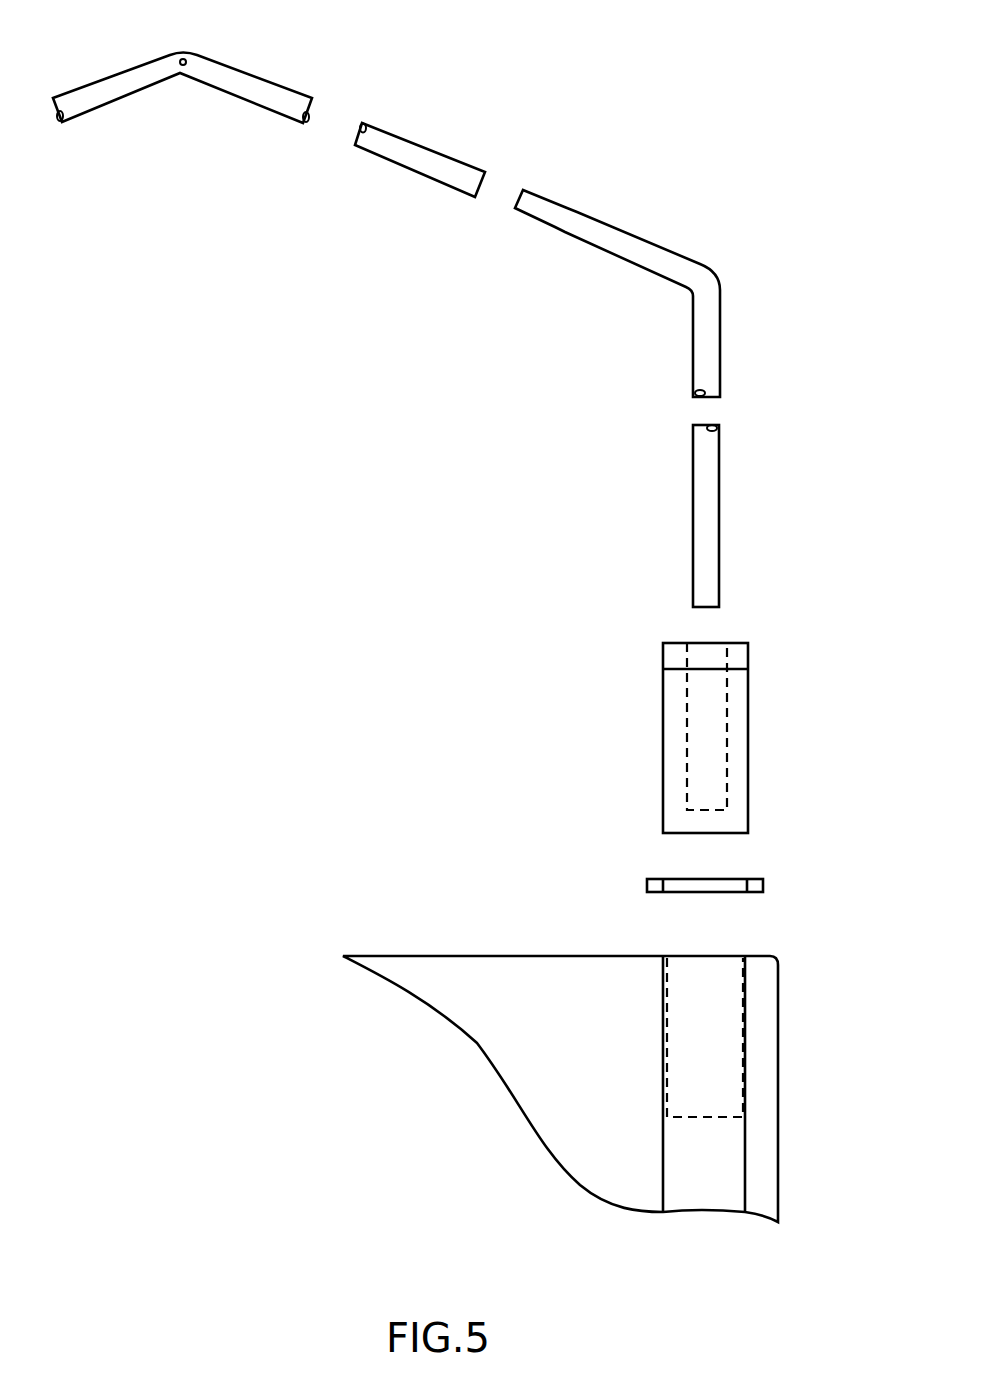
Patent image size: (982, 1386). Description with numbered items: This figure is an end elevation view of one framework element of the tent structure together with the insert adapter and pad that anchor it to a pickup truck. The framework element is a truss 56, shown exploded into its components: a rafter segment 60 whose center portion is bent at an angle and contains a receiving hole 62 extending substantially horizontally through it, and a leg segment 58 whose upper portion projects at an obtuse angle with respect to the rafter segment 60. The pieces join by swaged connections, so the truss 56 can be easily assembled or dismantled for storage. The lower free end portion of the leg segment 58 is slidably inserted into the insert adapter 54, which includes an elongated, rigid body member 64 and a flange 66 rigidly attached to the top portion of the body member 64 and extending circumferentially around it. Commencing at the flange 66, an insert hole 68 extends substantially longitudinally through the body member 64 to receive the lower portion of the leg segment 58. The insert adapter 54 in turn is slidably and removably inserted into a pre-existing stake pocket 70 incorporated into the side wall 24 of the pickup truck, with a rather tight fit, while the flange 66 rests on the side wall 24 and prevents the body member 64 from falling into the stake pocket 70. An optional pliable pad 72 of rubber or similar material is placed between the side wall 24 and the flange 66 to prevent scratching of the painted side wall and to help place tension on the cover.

The side wall 24 is at (569, 1070).
The insert adapter 54 is at (712, 716).
The truss 56 is at (683, 196).
The leg segment 58 is at (718, 367).
The rafter segment 60 is at (375, 120).
The receiving hole 62 is at (187, 58).
The elongated body member 64 is at (750, 785).
The flange 66 is at (677, 652).
The insert hole 68 is at (710, 680).
The stake pocket 70 is at (725, 970).
The pliable pad 72 is at (757, 877).